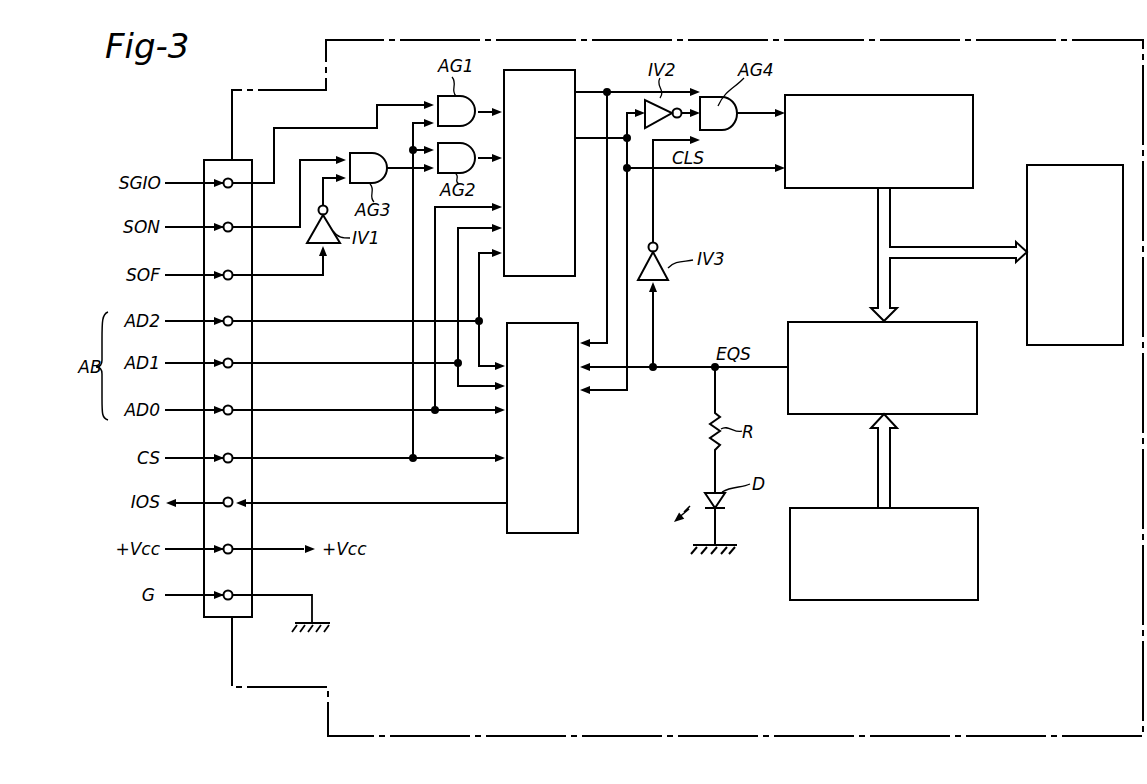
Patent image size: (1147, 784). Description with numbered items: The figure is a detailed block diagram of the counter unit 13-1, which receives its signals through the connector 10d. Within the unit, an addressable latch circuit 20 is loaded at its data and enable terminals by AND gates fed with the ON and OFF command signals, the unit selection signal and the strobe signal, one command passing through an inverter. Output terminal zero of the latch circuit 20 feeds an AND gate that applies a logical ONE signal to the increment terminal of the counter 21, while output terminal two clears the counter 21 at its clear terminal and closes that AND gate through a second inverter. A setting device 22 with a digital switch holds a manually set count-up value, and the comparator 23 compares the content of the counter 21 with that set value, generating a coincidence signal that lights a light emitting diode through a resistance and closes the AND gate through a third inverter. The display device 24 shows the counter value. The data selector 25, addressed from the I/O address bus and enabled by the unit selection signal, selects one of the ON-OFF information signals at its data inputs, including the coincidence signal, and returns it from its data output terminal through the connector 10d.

The counter unit 13-1 is at (950, 35).
The connector 10d is at (219, 152).
The addressable latch circuit 20 is at (566, 70).
The counter 21 is at (973, 112).
The setting device 22 is at (958, 512).
The comparator 23 is at (932, 327).
The display device 24 is at (1077, 178).
The data selector 25 is at (547, 533).